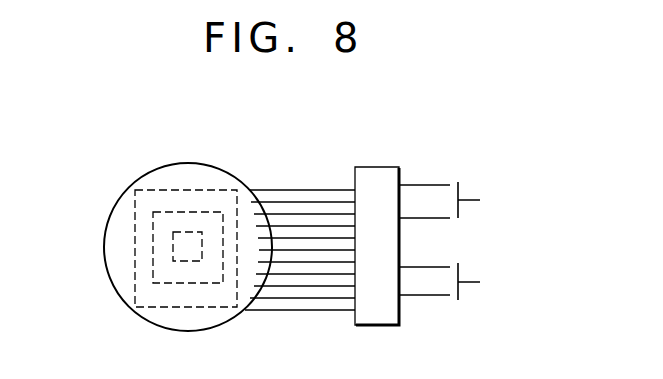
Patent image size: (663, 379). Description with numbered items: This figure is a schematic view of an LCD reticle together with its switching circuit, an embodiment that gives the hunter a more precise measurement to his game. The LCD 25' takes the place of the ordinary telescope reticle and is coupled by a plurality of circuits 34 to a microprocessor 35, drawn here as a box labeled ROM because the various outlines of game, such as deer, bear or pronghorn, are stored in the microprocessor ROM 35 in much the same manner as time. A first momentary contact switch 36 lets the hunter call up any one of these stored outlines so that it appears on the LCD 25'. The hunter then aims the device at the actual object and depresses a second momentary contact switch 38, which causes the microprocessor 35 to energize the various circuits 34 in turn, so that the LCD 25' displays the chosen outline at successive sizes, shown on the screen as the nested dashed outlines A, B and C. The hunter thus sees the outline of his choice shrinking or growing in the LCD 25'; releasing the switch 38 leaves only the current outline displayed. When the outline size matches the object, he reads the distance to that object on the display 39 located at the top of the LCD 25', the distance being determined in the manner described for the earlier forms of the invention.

The LCD 25' is at (188, 232).
The display 39 is at (155, 180).
The circuits 34 is at (288, 190).
The microprocessor ROM 35 is at (401, 173).
The momentary contact switch 36 is at (480, 200).
The momentary contact switch 38 is at (480, 282).
The outline A is at (153, 212).
The outline B is at (135, 245).
The outline C is at (173, 261).